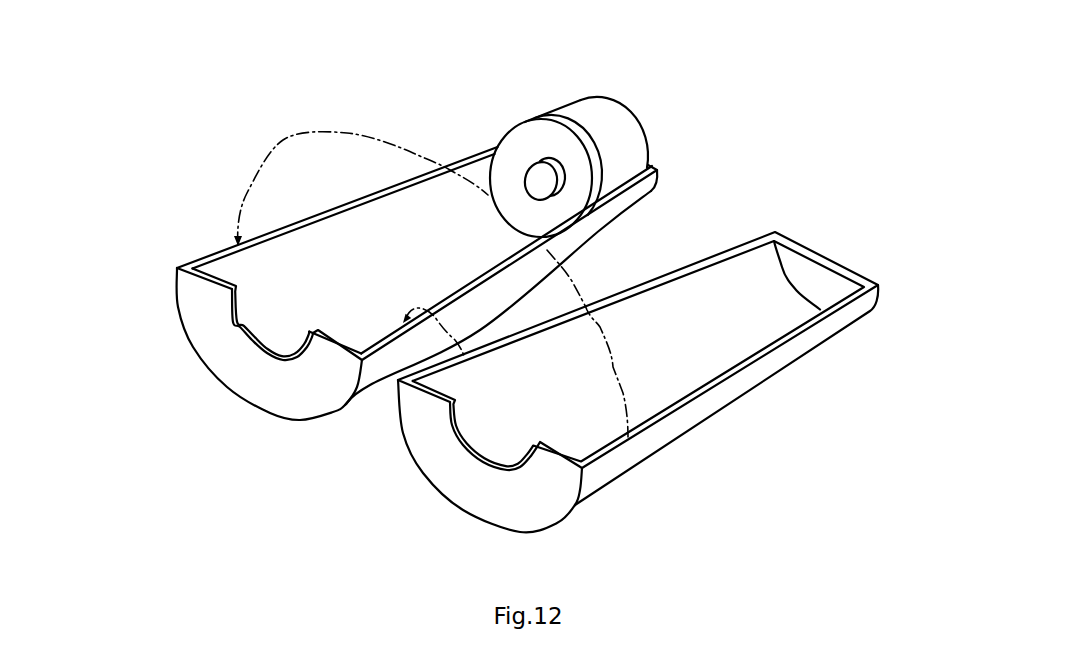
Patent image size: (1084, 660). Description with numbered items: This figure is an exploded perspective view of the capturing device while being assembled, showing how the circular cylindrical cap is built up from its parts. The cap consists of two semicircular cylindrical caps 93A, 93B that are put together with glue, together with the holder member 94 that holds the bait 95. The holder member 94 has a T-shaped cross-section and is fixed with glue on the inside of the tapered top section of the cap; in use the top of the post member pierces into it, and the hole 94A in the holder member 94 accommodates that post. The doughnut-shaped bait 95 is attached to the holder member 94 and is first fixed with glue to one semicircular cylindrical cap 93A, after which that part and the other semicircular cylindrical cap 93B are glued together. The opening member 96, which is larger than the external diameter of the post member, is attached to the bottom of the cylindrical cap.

The semicircular cylindrical cap 93A is at (337, 207).
The lower half clamp member 93B is at (800, 335).
The holder member 94 is at (598, 107).
The hinge hole 94A is at (526, 181).
The bait 95 is at (505, 133).
The opening member 96 is at (261, 329).